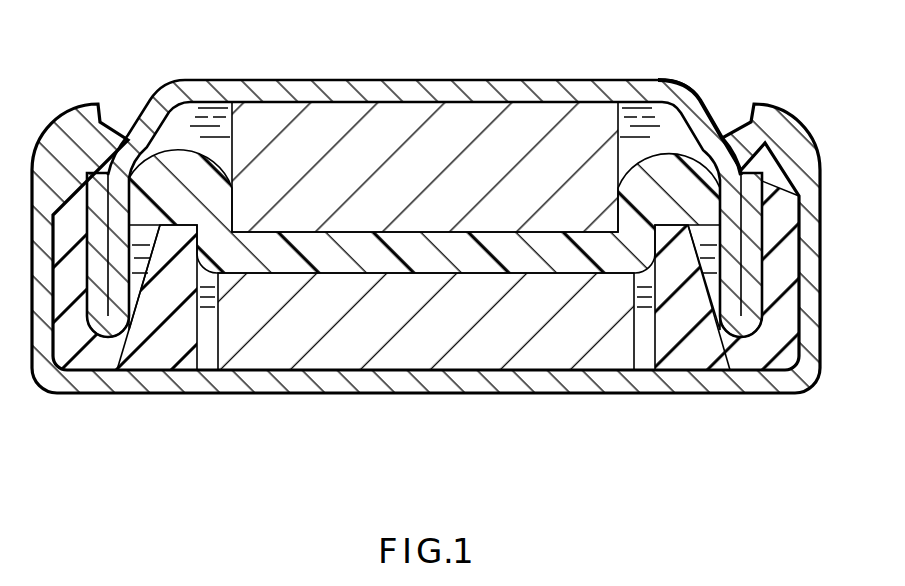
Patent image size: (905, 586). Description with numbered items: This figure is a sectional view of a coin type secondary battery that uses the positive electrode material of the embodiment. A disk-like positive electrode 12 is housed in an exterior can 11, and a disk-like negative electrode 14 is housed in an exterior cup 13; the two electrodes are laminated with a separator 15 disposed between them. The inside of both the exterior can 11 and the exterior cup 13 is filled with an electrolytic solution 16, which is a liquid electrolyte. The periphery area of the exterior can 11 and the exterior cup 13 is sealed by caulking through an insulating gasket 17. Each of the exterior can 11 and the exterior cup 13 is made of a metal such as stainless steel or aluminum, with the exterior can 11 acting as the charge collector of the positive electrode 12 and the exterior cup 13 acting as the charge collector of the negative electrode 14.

The exterior can 11 is at (290, 383).
The positive electrode 12 is at (428, 357).
The exterior cup 13 is at (263, 90).
The negative electrode 14 is at (412, 100).
The separator 15 is at (513, 243).
The electrolytic solution 16 is at (670, 90).
The insulating gasket 17 is at (152, 358).